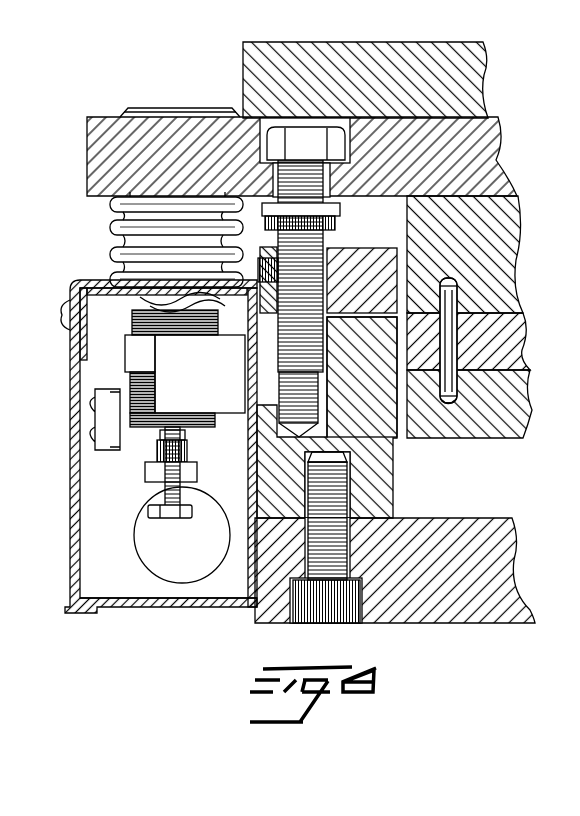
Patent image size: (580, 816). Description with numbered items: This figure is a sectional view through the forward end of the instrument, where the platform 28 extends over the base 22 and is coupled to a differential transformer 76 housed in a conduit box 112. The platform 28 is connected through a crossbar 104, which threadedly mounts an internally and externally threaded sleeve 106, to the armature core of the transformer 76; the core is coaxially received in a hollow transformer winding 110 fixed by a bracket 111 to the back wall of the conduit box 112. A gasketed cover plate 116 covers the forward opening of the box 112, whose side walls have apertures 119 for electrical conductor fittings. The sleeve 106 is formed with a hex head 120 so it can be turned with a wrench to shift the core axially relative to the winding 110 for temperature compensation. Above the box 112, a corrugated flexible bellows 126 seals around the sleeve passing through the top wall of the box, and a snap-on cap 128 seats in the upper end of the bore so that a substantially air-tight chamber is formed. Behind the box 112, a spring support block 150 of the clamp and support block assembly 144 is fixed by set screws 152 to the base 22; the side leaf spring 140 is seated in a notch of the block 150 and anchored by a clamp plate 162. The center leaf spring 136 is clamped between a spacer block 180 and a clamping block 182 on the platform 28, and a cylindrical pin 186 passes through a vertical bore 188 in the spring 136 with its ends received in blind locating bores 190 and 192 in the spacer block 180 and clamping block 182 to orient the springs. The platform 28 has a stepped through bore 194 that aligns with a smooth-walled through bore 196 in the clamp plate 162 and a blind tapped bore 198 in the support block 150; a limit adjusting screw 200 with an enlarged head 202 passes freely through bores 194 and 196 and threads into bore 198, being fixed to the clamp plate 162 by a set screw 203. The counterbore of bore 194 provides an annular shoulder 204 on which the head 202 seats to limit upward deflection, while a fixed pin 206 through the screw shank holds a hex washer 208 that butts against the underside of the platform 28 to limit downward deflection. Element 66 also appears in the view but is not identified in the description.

The support block 66 is at (473, 71).
The platform 28 is at (491, 143).
The snap-on cap 128 is at (196, 108).
The annular shoulder 204 is at (262, 150).
The stepped through bore 194 is at (270, 186).
The spacer block 180 is at (510, 221).
The center leaf spring 136 is at (523, 355).
The clamping block 182 is at (519, 415).
The blind locating bore 190 is at (440, 286).
The cylindrical pin 186 is at (451, 359).
The vertical bore 188 is at (455, 339).
The blind locating bore 192 is at (446, 402).
The clamp plate 162 is at (384, 248).
The clamp and support block assembly 144 is at (396, 463).
The side leaf spring 140 is at (404, 346).
The spring support block 150 is at (380, 489).
The base 22 is at (505, 547).
The set screws 152 is at (334, 622).
The limit adjusting screw 200 is at (330, 188).
The enlarged head 202 is at (309, 134).
The fixed pin 206 is at (340, 207).
The hex washer 208 is at (340, 222).
The set screw 203 is at (263, 262).
The smooth walled through bore 196 is at (262, 297).
The tapped bore 198 is at (283, 326).
The bellows 126 is at (112, 227).
The cover plate 116 is at (72, 497).
The conduit box 112 is at (133, 608).
The differential transformer 76 is at (130, 320).
The transformer winding 110 is at (135, 386).
The bracket 111 is at (243, 404).
The threaded sleeve 106 is at (187, 454).
The crossbar 104 is at (147, 471).
The hex head 120 is at (172, 516).
The apertures 119 is at (207, 574).